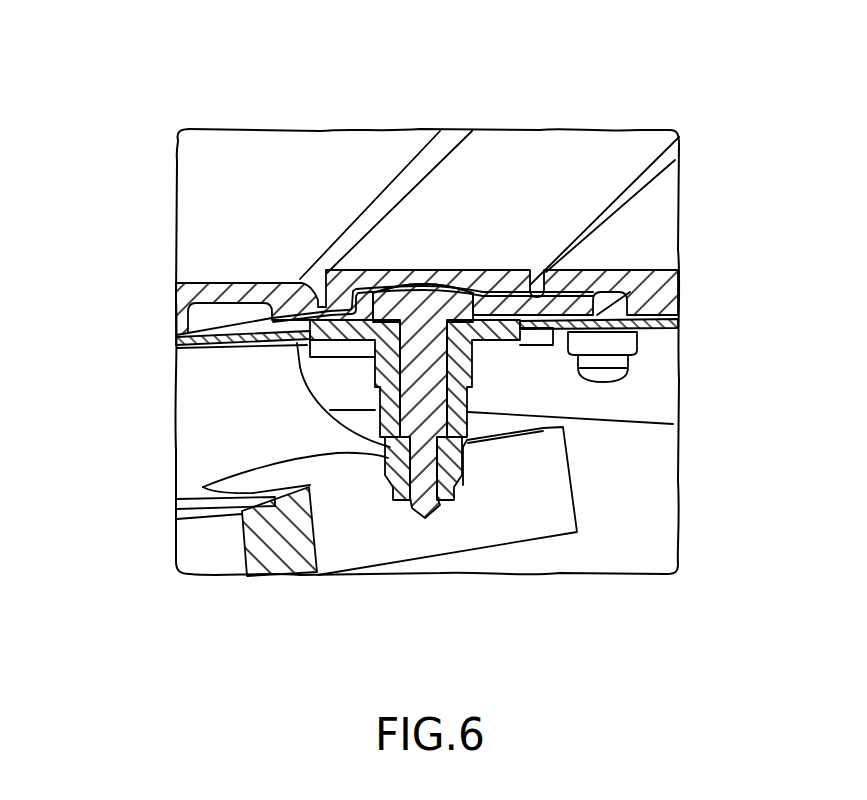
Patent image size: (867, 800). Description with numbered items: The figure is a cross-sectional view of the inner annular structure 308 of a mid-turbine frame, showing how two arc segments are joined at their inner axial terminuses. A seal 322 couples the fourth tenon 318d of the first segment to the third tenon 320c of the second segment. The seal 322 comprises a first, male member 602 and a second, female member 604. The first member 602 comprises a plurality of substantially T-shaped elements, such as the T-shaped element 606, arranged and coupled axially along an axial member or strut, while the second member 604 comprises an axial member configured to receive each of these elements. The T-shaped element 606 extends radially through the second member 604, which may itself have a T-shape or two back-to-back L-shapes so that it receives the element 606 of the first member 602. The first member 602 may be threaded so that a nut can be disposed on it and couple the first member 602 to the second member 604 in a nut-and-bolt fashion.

The inner annular structure 308 is at (132, 150).
The seal 322 is at (577, 143).
The fourth tenon 318d is at (310, 317).
The third tenon 320c is at (533, 328).
The first member 602 is at (433, 423).
The second member 604 is at (470, 403).
The T-shaped element 606 is at (425, 518).